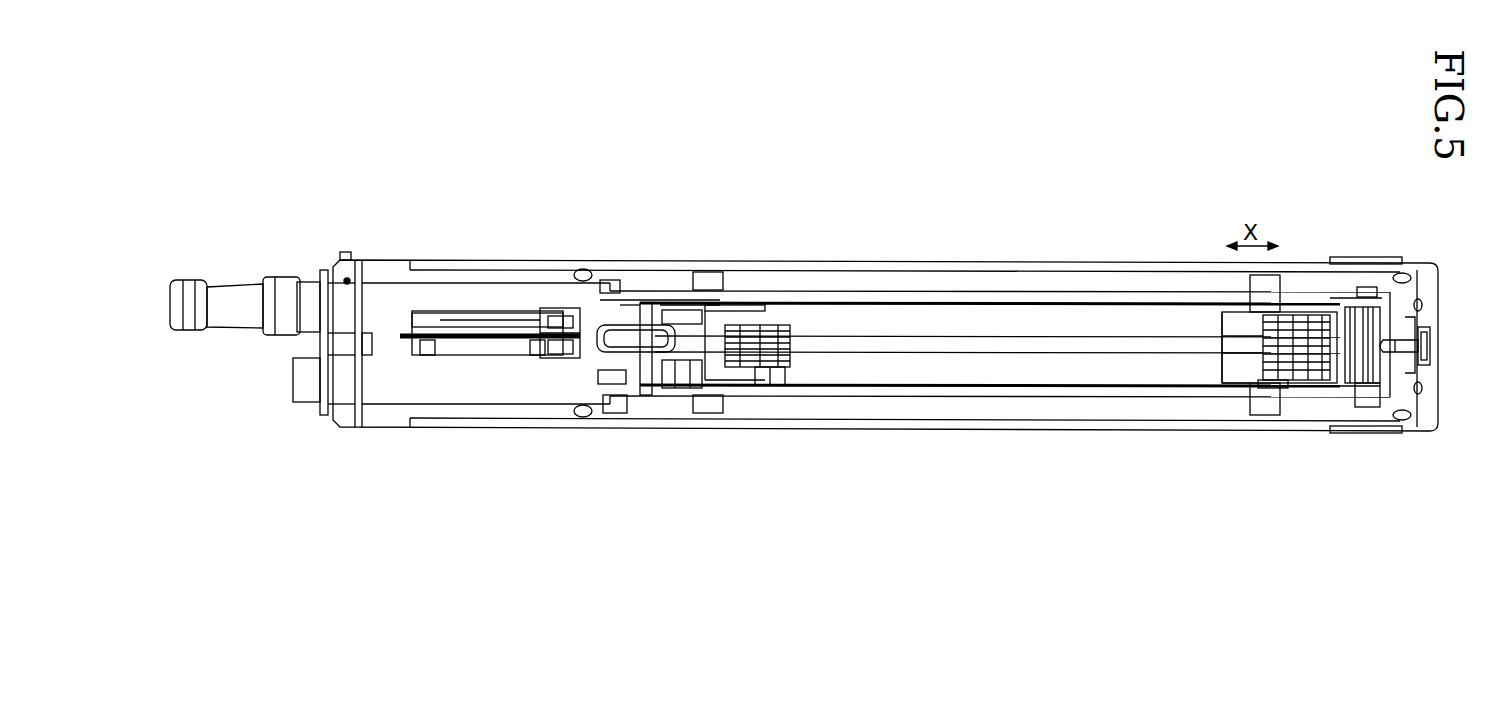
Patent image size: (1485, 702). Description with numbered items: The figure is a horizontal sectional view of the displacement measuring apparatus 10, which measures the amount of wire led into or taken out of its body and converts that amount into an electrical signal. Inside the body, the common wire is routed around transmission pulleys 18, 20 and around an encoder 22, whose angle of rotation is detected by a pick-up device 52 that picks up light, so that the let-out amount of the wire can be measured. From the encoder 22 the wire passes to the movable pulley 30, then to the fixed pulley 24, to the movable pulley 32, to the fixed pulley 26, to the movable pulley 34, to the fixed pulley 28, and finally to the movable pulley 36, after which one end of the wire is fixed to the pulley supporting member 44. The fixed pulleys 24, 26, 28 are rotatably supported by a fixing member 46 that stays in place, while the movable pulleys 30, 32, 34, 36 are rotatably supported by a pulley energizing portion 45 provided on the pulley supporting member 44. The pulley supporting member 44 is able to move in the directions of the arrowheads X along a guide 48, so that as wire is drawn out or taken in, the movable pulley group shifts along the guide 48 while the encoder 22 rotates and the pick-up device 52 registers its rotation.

The displacement measuring apparatus 10 is at (903, 226).
The transmission pulley 18 is at (458, 318).
The transmission pulley 20 is at (533, 322).
The encoder 22 is at (610, 337).
The fixed pulley 24 is at (787, 307).
The fixed pulley 26 is at (790, 350).
The fixed pulley 28 is at (785, 385).
The movable pulley 30 is at (1262, 320).
The movable pulley 32 is at (1262, 345).
The movable pulley 34 is at (1265, 372).
The movable pulley 36 is at (1265, 385).
The pulley supporting member 44 is at (1227, 373).
The pulley energizing portion 45 is at (1307, 378).
The fixing member 46 is at (727, 370).
The guide 48 is at (1065, 300).
The pick-up device 52 is at (620, 395).